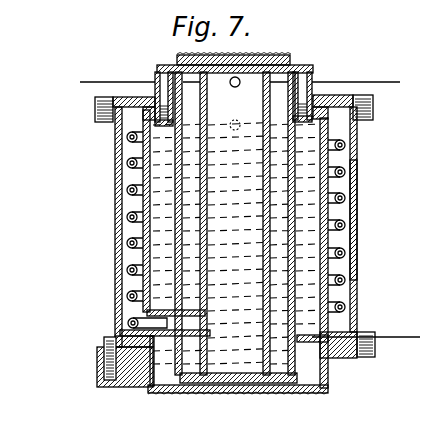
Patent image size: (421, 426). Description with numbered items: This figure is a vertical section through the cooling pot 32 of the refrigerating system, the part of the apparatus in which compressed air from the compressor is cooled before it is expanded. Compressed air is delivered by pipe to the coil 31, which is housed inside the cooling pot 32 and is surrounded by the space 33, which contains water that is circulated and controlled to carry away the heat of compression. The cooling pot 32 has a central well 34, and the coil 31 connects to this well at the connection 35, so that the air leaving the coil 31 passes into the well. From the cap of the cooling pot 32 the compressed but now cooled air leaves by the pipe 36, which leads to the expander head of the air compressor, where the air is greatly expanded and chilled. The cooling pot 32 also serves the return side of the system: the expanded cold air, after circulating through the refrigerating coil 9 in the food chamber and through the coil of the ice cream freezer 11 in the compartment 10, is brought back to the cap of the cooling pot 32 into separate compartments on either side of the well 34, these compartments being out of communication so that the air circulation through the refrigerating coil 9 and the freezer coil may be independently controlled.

The pipe 36 is at (243, 64).
The ice cream freezer 11 is at (241, 82).
The refrigerating coil 9 is at (95, 117).
The coil 31 is at (357, 173).
The cooling pot 32 is at (357, 237).
The space 33 is at (345, 326).
The connection of coil to central well 35 is at (147, 313).
The compartment 10 is at (100, 340).
The central well 34 is at (238, 363).